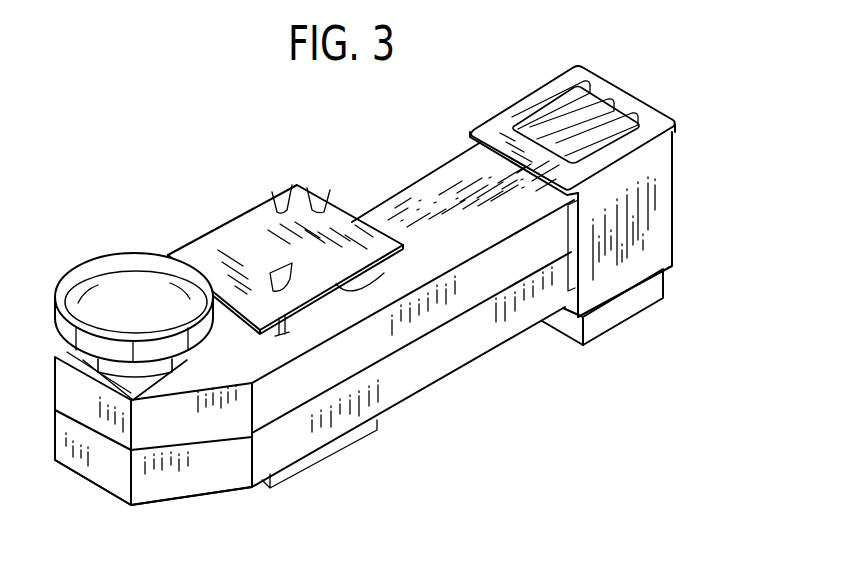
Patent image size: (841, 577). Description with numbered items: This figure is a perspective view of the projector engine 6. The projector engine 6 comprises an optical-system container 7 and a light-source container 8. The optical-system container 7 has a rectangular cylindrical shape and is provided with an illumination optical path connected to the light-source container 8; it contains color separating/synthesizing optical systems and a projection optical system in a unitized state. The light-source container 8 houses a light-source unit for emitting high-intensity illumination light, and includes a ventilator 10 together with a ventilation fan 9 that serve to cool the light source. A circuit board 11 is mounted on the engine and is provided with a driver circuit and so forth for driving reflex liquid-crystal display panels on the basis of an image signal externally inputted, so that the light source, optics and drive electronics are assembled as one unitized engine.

The projector engine 6 is at (432, 387).
The optical-system container 7 is at (285, 437).
The light-source container 8 is at (658, 158).
The ventilation fan 9 is at (623, 323).
The ventilator 10 is at (588, 110).
The circuit board 11 is at (238, 236).